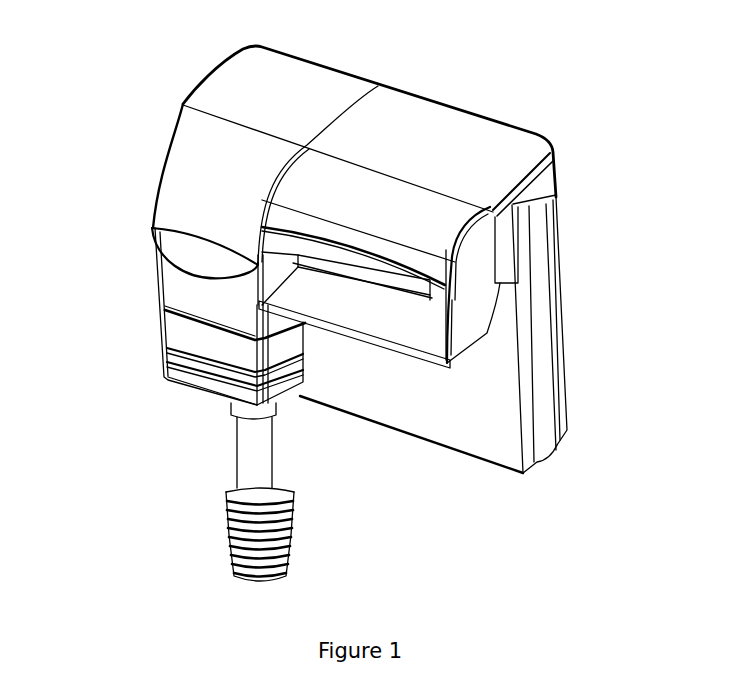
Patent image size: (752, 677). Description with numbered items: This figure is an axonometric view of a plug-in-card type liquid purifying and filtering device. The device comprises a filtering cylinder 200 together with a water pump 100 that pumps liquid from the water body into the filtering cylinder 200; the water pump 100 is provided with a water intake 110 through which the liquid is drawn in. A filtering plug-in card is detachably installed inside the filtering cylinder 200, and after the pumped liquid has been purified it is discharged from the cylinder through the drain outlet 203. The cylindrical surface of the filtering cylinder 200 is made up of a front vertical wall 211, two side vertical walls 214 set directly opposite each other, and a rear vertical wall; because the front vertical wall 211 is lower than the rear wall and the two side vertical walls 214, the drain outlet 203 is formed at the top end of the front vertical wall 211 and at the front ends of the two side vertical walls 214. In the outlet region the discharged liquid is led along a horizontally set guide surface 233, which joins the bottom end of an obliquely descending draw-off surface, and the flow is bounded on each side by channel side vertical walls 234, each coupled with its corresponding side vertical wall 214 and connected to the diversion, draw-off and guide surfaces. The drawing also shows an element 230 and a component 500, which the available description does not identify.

The water pump 100 is at (192, 337).
The water intake 110 is at (222, 532).
The filtering cylinder 200 is at (506, 365).
The drain outlet 203 is at (373, 285).
The front vertical wall 211 is at (417, 388).
The side vertical walls 214 is at (540, 293).
The latch tab 230 is at (470, 360).
The guide surface 233 is at (403, 325).
The channel side vertical walls 234 is at (475, 290).
The cap 500 is at (377, 138).